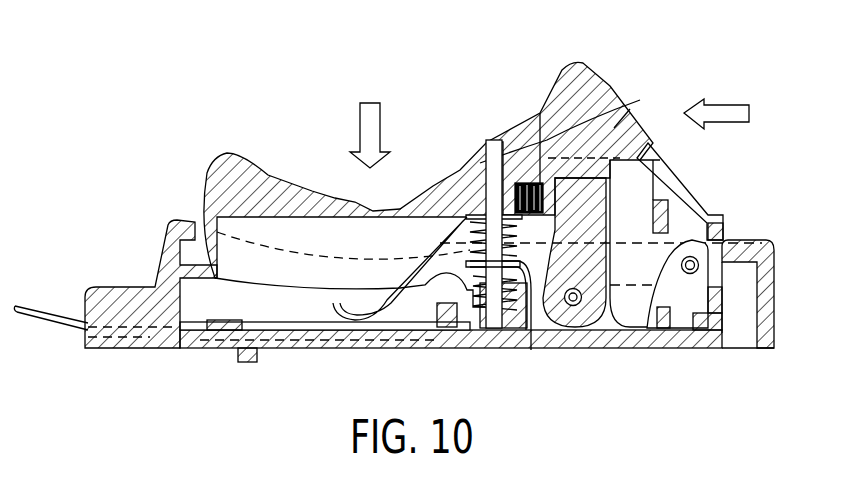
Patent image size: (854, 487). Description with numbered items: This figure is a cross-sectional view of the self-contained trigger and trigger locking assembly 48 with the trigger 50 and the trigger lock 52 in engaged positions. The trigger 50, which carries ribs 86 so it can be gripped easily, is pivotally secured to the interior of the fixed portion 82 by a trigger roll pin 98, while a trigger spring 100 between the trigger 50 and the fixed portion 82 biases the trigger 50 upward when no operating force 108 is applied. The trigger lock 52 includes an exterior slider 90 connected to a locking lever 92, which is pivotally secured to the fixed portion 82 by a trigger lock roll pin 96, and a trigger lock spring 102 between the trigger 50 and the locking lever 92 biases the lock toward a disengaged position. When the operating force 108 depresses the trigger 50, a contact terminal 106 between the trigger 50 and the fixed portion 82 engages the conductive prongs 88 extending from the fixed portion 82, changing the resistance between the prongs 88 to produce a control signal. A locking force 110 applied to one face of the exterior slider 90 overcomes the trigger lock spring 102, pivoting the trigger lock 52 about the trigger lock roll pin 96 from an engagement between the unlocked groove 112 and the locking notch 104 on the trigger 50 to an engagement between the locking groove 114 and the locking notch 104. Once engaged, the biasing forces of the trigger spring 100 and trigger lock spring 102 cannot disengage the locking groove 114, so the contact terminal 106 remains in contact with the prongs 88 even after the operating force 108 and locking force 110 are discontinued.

The self-contained trigger and trigger locking assembly 48 is at (162, 113).
The trigger 50 is at (224, 150).
The trigger lock 52 is at (606, 64).
The fixed portion 82 is at (116, 280).
The ribs 86 is at (303, 150).
The conductive prongs 88 is at (52, 325).
The exterior slider 90 is at (639, 100).
The locking lever 92 is at (618, 207).
The trigger lock roll pin 96 is at (585, 318).
The trigger roll pin 98 is at (688, 274).
The trigger spring 100 is at (513, 318).
The trigger lock spring 102 is at (513, 162).
The locking notch 104 is at (535, 170).
The contact terminal 106 is at (402, 298).
The operating force 108 is at (340, 128).
The locking force 110 is at (711, 100).
The unlocked groove 112 is at (520, 153).
The locking groove 114 is at (634, 108).